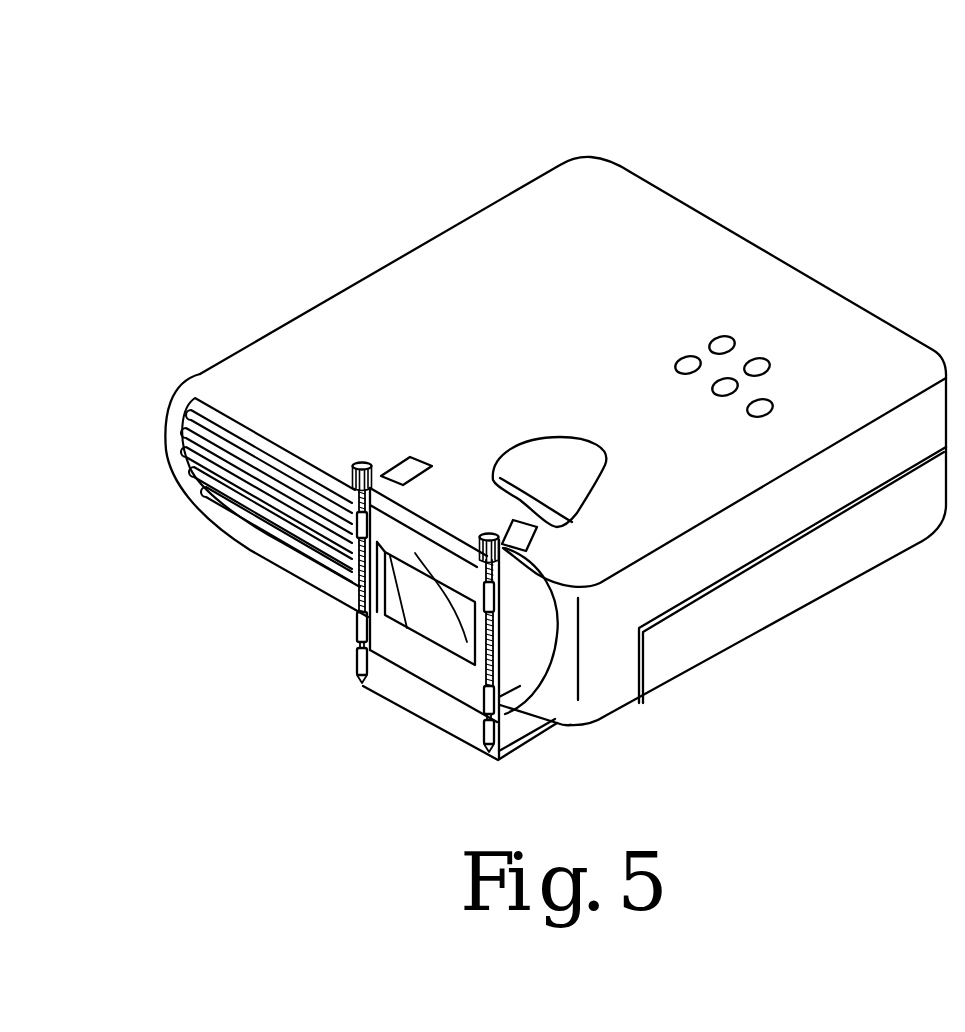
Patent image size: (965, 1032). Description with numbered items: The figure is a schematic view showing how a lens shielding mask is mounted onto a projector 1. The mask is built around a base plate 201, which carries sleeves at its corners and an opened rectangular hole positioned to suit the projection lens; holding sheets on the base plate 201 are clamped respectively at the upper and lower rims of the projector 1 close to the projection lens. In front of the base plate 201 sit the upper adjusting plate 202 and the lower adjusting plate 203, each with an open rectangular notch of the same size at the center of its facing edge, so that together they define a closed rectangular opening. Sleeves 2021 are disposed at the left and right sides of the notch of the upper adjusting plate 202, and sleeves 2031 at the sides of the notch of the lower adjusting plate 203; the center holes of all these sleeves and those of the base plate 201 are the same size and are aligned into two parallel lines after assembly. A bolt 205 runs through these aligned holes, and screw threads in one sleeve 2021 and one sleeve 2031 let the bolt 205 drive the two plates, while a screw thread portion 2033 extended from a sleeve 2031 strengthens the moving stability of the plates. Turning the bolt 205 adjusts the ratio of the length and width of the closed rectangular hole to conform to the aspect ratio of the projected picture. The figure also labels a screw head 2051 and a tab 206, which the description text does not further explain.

The projector 1 is at (630, 243).
The base plate 201 is at (462, 727).
The upper adjusting plate 202 is at (413, 547).
The sleeve 2021 is at (357, 527).
The lower adjusting plate 203 is at (422, 655).
The sleeve 2031 is at (357, 632).
The screw thread portion 2033 is at (498, 650).
The bolt 205 is at (447, 573).
The screw head 2051 is at (352, 472).
The positioning tab 206 is at (407, 470).